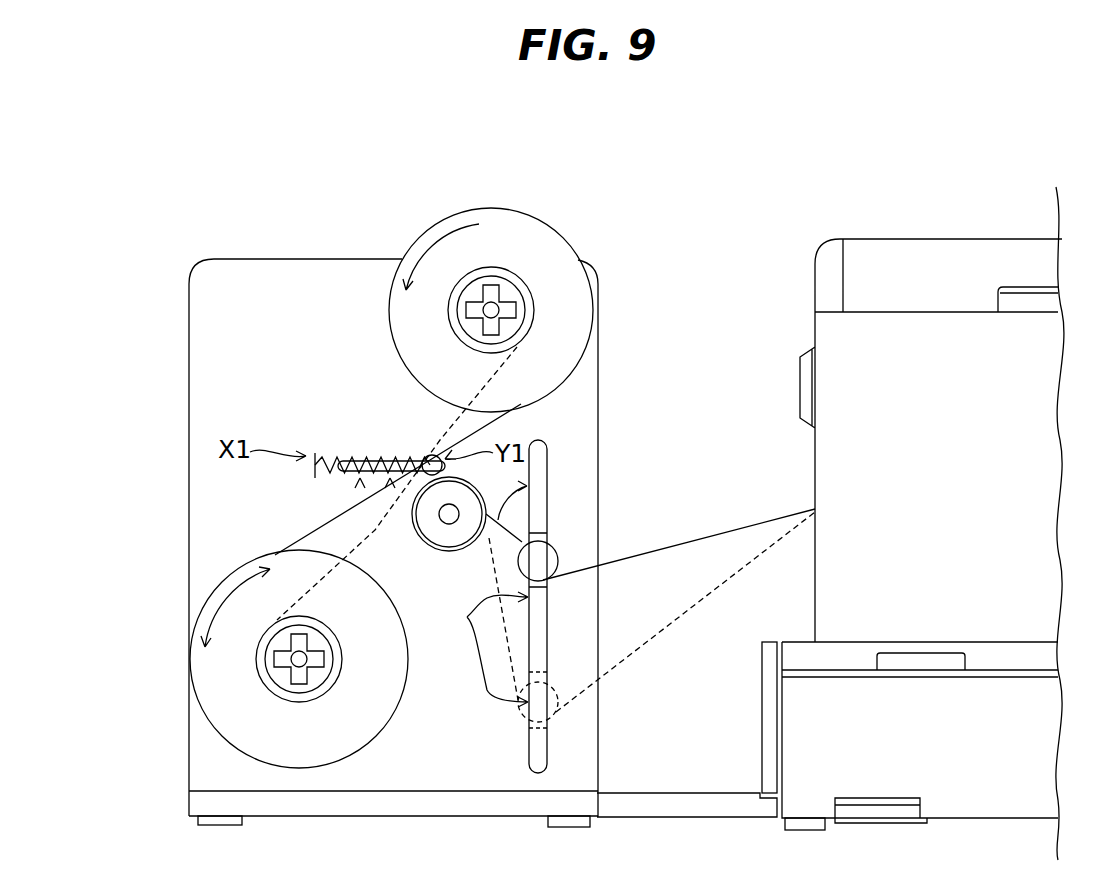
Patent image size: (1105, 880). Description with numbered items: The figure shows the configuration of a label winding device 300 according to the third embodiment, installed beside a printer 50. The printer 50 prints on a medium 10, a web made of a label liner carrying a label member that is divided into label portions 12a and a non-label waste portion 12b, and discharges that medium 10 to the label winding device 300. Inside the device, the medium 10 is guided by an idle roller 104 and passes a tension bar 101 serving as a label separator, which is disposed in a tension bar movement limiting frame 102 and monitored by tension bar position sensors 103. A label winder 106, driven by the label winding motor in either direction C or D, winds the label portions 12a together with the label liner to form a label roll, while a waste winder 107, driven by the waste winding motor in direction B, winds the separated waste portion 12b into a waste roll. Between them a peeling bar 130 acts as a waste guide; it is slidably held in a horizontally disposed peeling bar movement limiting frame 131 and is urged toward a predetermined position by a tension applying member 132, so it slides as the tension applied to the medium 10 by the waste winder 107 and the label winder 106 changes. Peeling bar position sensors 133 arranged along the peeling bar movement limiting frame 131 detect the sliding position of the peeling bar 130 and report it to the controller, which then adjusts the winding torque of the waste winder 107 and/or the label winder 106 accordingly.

The label winding device 300 is at (600, 201).
The waste winder 107 is at (492, 268).
The label winder 106 is at (267, 688).
The printer 50 is at (880, 239).
The medium 10 is at (733, 530).
The label portions 12a is at (335, 518).
The waste portion 12b is at (503, 410).
The tension applying member 132 is at (320, 455).
The peeling bar movement limiting frame 131 is at (375, 460).
The peeling bar 130 is at (428, 456).
The peeling bar position sensors 133 is at (390, 478).
The idle roller 104 is at (424, 542).
The tension bar 101 is at (540, 560).
The tension bar movement limiting frame 102 is at (530, 627).
The tension bar position sensors 103 is at (467, 617).